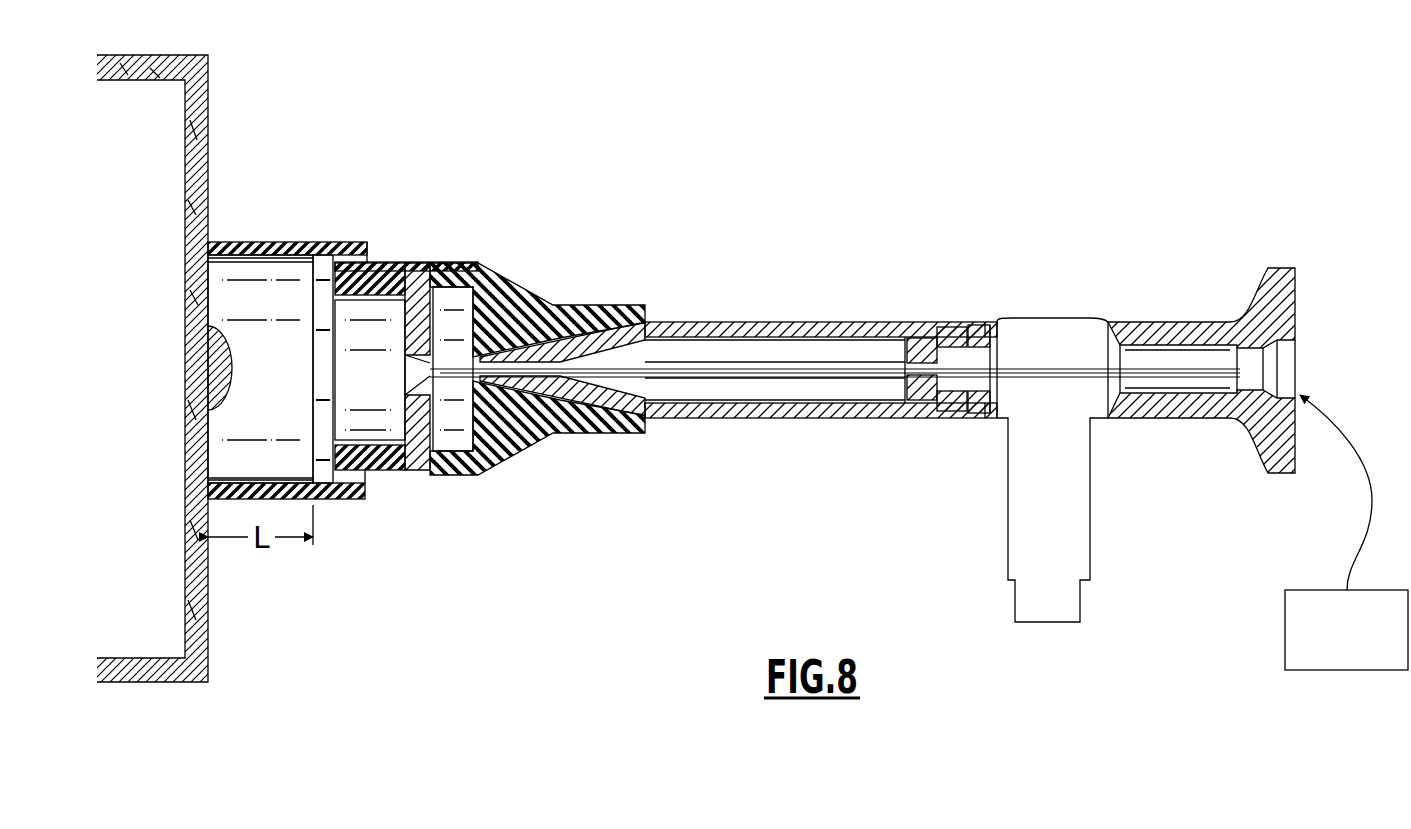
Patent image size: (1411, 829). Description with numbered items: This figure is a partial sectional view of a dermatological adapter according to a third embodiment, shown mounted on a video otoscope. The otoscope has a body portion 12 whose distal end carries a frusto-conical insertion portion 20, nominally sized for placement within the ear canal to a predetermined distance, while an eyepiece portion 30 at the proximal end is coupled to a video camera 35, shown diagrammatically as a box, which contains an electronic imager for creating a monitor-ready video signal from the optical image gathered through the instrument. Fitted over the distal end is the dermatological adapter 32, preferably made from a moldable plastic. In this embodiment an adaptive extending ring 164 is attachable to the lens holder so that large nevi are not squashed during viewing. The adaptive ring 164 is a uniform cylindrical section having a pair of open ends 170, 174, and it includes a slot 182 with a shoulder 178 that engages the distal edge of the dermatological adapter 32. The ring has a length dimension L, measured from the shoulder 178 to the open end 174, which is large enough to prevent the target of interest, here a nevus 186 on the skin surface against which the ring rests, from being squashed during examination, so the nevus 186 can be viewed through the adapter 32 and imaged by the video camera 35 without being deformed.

The body portion 12 is at (1025, 318).
The frusto-conical insertion portion 20 is at (655, 420).
The eyepiece portion 30 is at (1297, 372).
The dermatological adapter 32 is at (500, 465).
The video camera 35 is at (1285, 630).
The adaptive extending ring 164 is at (235, 242).
The open end 170 is at (367, 256).
The open end 174 is at (190, 465).
The shoulder 178 is at (305, 242).
The slot 182 is at (330, 245).
The nevus 186 is at (212, 372).